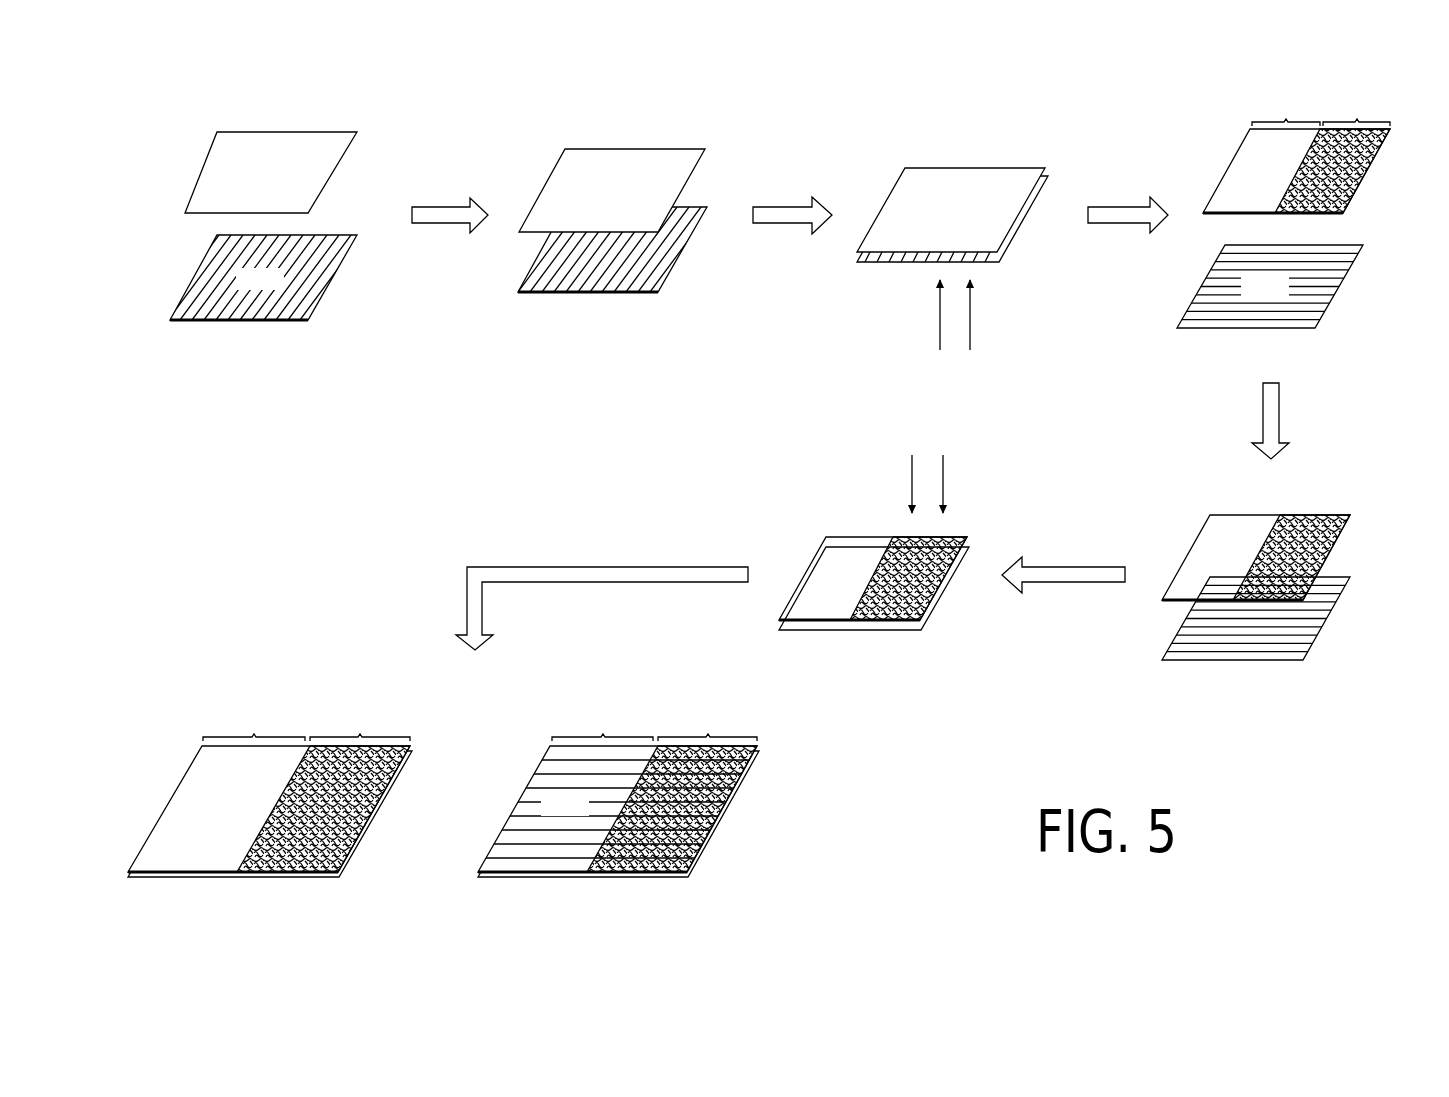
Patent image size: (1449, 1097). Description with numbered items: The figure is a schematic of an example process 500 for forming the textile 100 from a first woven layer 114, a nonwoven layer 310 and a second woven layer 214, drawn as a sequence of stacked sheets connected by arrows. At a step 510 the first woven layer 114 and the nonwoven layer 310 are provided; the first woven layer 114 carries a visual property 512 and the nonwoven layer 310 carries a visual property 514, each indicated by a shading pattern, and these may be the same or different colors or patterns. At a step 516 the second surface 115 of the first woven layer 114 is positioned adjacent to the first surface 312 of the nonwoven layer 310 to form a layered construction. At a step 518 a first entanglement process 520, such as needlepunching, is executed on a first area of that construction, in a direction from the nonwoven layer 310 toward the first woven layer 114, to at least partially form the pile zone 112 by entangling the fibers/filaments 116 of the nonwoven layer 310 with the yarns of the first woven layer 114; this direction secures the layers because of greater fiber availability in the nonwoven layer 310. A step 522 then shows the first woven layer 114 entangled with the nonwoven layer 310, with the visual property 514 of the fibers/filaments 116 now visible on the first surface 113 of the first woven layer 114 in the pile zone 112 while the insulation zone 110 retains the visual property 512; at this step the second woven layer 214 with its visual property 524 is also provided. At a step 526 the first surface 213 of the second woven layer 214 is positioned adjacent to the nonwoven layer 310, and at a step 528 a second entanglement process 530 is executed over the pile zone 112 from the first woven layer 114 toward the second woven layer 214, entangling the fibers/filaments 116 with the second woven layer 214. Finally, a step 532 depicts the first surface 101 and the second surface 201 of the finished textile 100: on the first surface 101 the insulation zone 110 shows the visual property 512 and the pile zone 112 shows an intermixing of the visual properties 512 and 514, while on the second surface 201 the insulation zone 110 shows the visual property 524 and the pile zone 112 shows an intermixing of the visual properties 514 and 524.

The process 500 is at (128, 152).
The step 510 is at (237, 380).
The visual property 512 is at (237, 185).
The visual property 514 is at (237, 295).
The first surface 113 is at (237, 133).
The second surface 115 is at (183, 206).
The first woven layer 114 is at (305, 133).
The first surface 312 is at (318, 240).
The nonwoven layer 310 is at (318, 262).
The step 516 is at (572, 336).
The step 518 is at (862, 314).
The first entanglement process 520 is at (984, 307).
The insulation zone 110 is at (761, 416).
The pile zone 112 is at (850, 416).
The fibers/filaments 116 is at (1390, 133).
The step 522 is at (1390, 244).
The visual property 524 is at (1242, 300).
The first surface 213 is at (1335, 262).
The second woven layer 214 is at (1310, 335).
The step 526 is at (1227, 709).
The step 528 is at (827, 679).
The second entanglement process 530 is at (960, 481).
The textile 100 is at (145, 750).
The first surface 101 is at (188, 813).
The step 532 is at (379, 947).
The second surface 201 is at (527, 850).